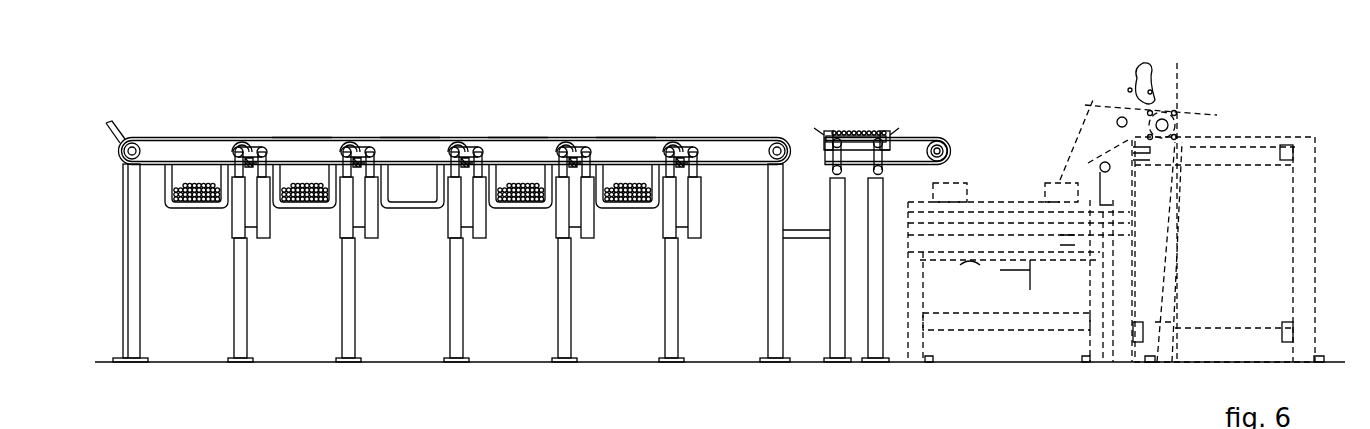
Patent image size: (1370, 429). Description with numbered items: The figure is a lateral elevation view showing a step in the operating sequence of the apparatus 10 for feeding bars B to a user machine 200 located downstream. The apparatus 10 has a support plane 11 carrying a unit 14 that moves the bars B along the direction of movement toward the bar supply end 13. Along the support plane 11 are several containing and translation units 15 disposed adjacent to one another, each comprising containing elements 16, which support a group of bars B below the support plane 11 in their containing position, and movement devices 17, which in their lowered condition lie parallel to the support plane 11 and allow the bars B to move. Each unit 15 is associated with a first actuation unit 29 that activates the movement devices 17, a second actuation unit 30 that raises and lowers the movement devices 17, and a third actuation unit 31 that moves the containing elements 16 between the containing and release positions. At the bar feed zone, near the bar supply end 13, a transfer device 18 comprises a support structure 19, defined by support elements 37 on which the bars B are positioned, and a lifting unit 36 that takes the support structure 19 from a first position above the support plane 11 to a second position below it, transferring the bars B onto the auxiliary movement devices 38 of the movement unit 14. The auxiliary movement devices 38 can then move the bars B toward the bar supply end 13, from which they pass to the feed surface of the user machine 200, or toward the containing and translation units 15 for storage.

The apparatus 10 is at (964, 58).
The support plane 11 is at (468, 197).
The bar supply end 13 is at (952, 144).
The unit to move the bars 14 is at (722, 131).
The containing and translation unit 15 is at (292, 308).
The containing element 16 is at (305, 214).
The movement device 17 is at (292, 138).
The transfer device 18 is at (855, 204).
The support structure 19 is at (826, 128).
The first actuation unit 29 is at (251, 145).
The second actuation unit 30 is at (260, 243).
The third actuation unit 31 is at (240, 241).
The lifting unit 36 is at (833, 173).
The support element 37 is at (872, 131).
The auxiliary movement device 38 is at (903, 121).
The user machine 200 is at (1232, 112).
The bars B is at (204, 185).